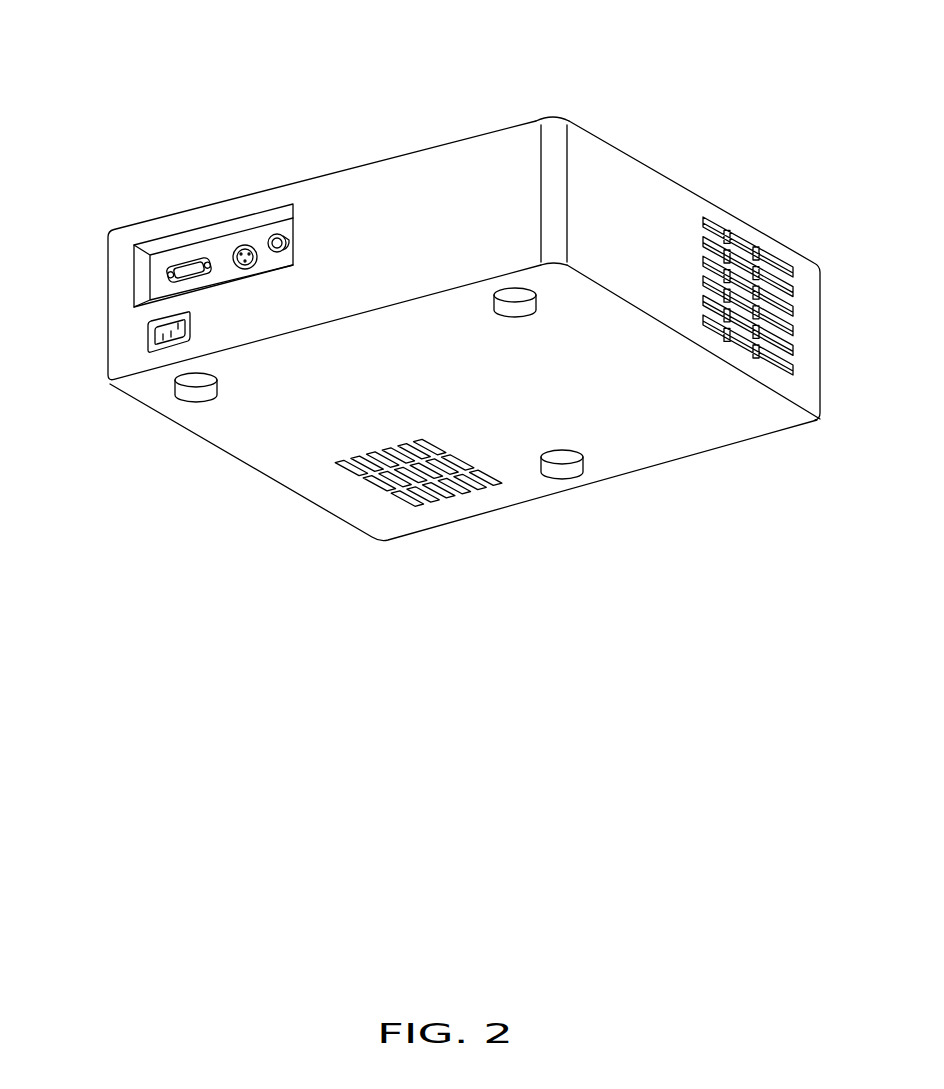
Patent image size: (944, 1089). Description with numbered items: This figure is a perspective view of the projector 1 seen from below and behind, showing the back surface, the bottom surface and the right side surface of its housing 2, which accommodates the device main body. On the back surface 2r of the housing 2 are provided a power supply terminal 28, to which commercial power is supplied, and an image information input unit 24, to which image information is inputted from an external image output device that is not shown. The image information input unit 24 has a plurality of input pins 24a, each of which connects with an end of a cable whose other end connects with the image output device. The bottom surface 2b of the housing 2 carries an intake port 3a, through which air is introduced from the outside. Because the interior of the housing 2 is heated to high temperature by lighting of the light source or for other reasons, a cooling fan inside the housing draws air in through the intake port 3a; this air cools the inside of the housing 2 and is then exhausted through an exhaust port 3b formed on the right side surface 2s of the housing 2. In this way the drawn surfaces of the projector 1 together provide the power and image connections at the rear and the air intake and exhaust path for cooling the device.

The projector 1 is at (648, 89).
The housing 2 is at (505, 142).
The back surface 2r is at (398, 156).
The right side surface 2s is at (682, 203).
The bottom surface 2b is at (622, 442).
The intake port 3a is at (410, 507).
The exhaust port 3b is at (775, 262).
The image information input unit 24 is at (155, 270).
The input pins 24a is at (181, 259).
The power supply terminal 28 is at (150, 323).